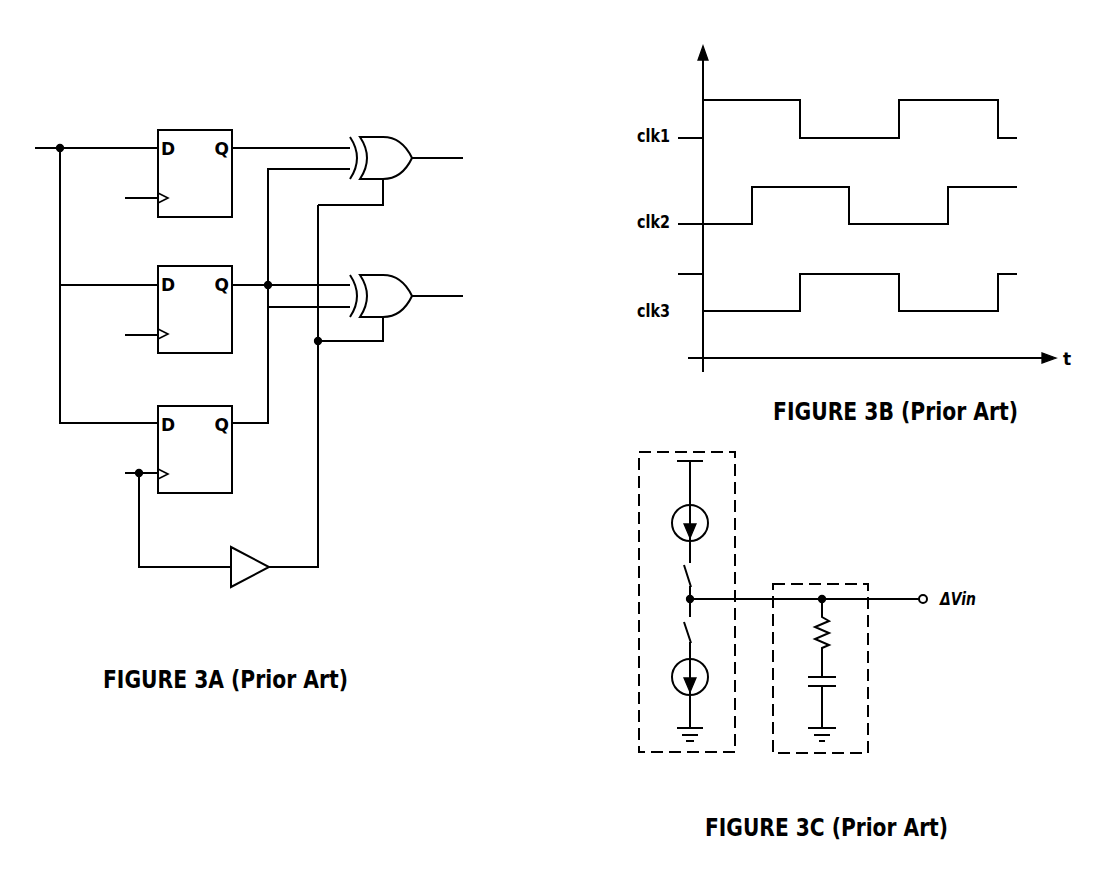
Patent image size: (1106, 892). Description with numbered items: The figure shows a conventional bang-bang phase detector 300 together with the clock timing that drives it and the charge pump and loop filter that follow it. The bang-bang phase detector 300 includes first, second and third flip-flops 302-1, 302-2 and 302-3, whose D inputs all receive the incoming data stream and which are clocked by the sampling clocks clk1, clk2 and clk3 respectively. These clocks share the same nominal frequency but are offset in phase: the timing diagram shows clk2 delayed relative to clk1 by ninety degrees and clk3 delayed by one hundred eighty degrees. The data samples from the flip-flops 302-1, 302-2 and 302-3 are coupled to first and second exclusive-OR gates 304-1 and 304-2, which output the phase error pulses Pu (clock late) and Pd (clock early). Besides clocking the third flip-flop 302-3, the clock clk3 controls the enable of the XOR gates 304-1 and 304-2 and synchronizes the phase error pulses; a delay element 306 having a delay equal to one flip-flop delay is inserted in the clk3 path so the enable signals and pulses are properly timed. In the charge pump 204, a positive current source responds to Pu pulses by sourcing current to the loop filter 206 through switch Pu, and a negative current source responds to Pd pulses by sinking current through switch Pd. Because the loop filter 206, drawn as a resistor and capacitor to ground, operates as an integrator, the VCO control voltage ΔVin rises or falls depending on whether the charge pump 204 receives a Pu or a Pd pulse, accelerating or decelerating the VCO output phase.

In FIG. 3A, the bang-bang phase detector 300 is at (305, 330).
In FIG. 3A, the first flip-flop 302-1 is at (193, 123).
In FIG. 3A, the second flip-flop 302-2 is at (193, 258).
In FIG. 3A, the third flip-flop 302-3 is at (193, 400).
In FIG. 3A, the first exclusive-OR (XOR) gate 304-1 is at (386, 129).
In FIG. 3A, the second exclusive-OR (XOR) gate 304-2 is at (386, 263).
In FIG. 3A, the delay element 306 is at (253, 549).
In FIG. 3C, the charge pump 204 is at (654, 602).
In FIG. 3C, the loop filter 206 is at (846, 668).